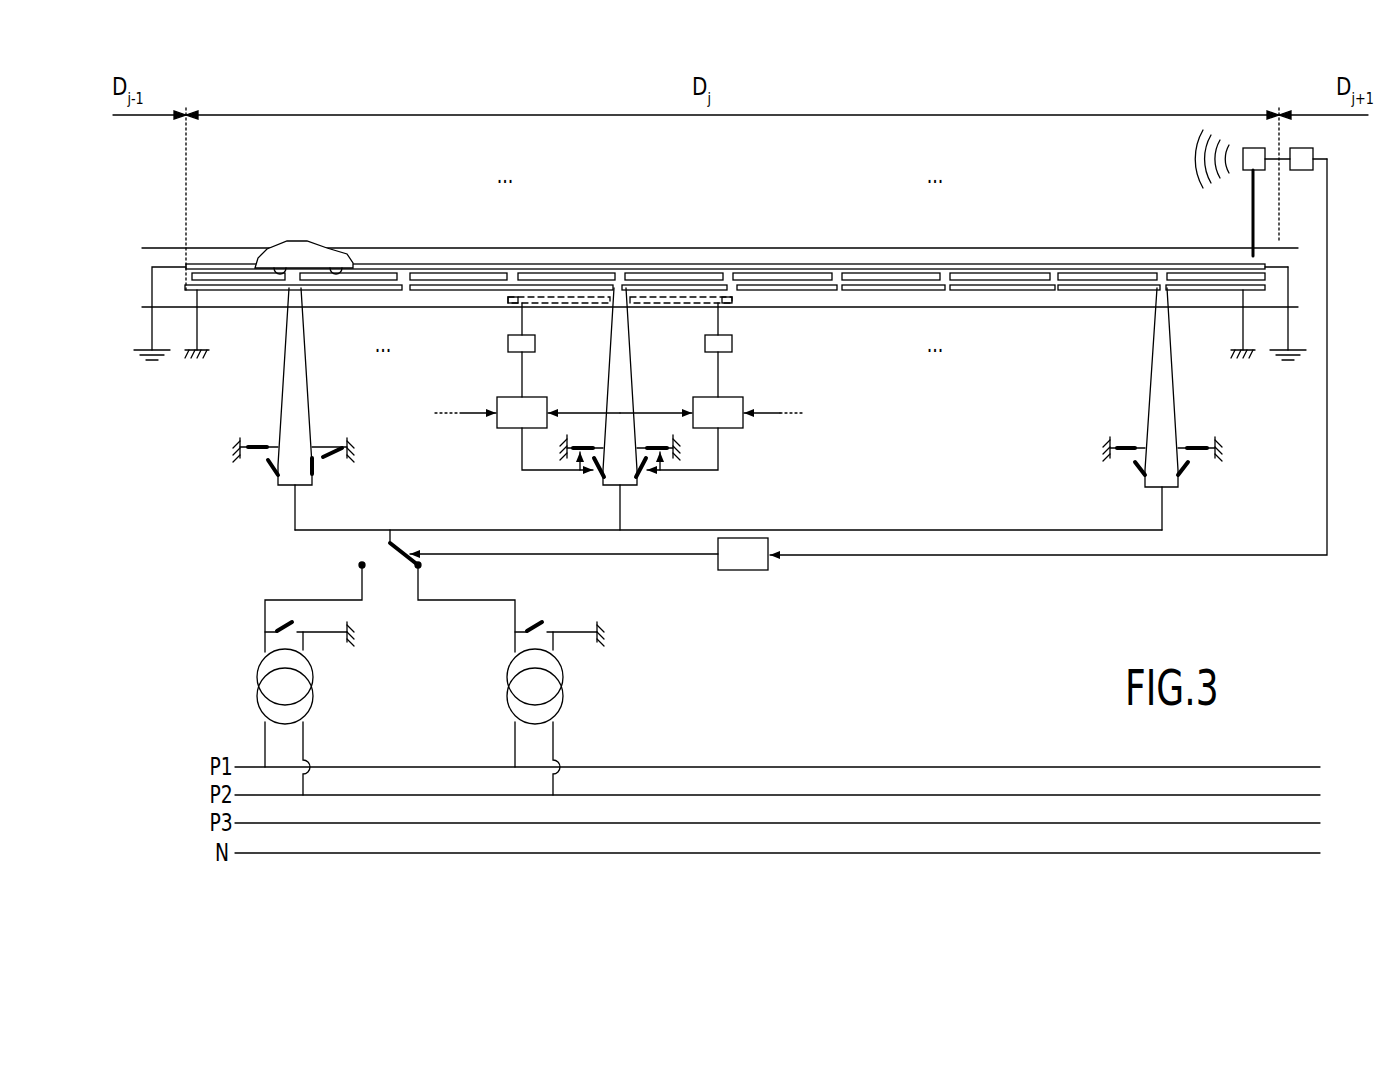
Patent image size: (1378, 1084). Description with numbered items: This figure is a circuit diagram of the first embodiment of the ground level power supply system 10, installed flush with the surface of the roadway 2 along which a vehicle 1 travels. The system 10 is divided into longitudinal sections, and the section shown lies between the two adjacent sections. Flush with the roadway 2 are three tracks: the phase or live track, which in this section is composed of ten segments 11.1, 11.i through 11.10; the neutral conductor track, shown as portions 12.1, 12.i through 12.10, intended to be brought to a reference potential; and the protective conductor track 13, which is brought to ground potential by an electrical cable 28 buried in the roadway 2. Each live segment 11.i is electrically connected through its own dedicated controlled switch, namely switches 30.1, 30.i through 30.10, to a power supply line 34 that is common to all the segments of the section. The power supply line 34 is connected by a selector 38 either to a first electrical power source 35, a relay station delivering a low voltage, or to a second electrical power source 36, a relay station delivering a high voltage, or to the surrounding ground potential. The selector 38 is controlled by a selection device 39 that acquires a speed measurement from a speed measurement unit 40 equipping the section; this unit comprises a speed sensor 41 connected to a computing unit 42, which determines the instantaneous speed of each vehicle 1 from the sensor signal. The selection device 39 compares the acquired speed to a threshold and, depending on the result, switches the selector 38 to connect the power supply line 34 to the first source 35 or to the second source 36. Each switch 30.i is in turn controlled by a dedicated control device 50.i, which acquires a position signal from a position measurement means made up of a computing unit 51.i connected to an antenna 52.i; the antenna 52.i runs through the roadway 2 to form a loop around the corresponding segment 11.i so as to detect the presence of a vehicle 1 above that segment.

The vehicle 1 is at (305, 238).
The roadway 2 is at (1290, 249).
The ground level power supply system 10 is at (247, 386).
The segment of the live track 11.1 is at (226, 276).
The segment of the live track 11.i is at (582, 276).
The segment of the live track 11.10 is at (1177, 276).
The neutral conductor track segment 12.1 is at (245, 291).
The neutral conductor track segment 12.i is at (518, 291).
The neutral conductor track segment 12.10 is at (1200, 291).
The protective conductor track 13 is at (1265, 266).
The electrical cable 28 is at (148, 285).
The controlled switch 30.1 is at (256, 463).
The controlled switch 30.i is at (595, 481).
The controlled switch 30.10 is at (1190, 481).
The power supply line 34 is at (920, 529).
The first electrical power source 35 is at (318, 689).
The second electrical power source 36 is at (568, 689).
The selector 38 is at (405, 562).
The selection device 39 is at (742, 571).
The speed measurement unit 40 is at (1261, 145).
The speed sensor 41 is at (1253, 147).
The computing unit 42 is at (1296, 121).
The control device 50.i is at (508, 430).
The computing unit 51.i is at (528, 352).
The antenna 52.i is at (547, 304).